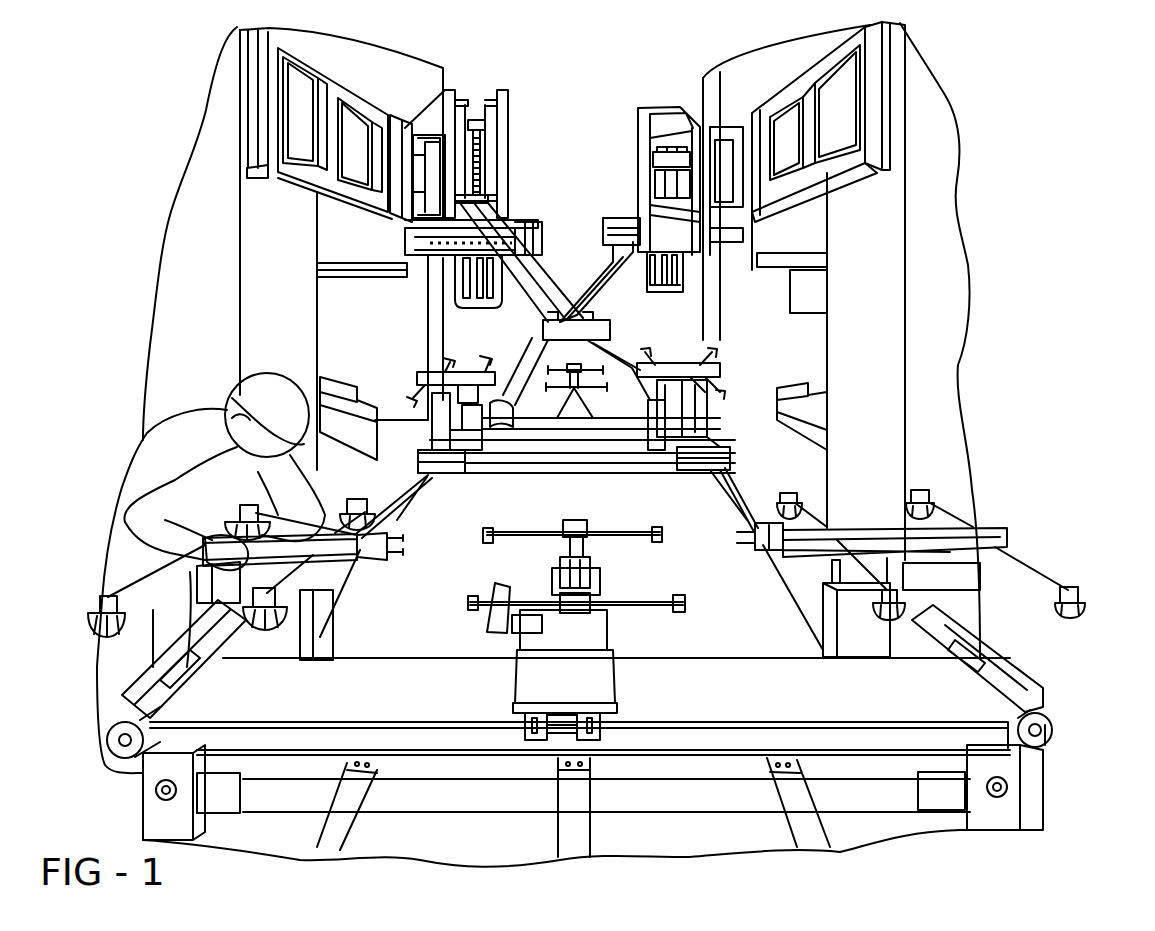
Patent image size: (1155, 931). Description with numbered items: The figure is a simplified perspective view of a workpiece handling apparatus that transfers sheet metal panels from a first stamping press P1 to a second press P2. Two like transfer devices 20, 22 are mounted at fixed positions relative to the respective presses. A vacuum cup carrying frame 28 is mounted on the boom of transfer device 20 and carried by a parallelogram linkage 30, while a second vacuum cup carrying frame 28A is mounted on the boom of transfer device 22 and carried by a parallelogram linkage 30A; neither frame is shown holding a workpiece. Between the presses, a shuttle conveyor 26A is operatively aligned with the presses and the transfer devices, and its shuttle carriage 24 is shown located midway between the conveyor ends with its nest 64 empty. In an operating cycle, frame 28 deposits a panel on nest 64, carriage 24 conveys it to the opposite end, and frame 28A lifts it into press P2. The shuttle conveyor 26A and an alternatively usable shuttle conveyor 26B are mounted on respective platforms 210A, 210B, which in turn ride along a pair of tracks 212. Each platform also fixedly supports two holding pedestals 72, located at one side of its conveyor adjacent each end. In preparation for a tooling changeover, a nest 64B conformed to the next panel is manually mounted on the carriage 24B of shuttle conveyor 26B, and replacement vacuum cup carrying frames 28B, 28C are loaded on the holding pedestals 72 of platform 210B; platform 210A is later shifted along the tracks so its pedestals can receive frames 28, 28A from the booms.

The transfer device 20 is at (512, 152).
The transfer device 22 is at (638, 138).
The first stamping press P1 is at (352, 303).
The second press P2 is at (805, 310).
The parallelogram linkage 30 is at (512, 312).
The parallelogram linkage 30A is at (607, 305).
The nest 64 is at (568, 362).
The vacuum cup carrying frame 28 is at (410, 380).
The vacuum cup carrying frame 28A is at (727, 366).
The holding pedestal 72 is at (853, 628).
The vacuum cup carrying frame 28B is at (357, 500).
The vacuum cup carrying frame 28C is at (763, 520).
The shuttle conveyor 26A is at (527, 414).
The platform 210A is at (548, 463).
The shuttle carriage 24 is at (598, 414).
The tracks 212 is at (405, 530).
The nest 64B is at (612, 538).
The carriage 24B is at (618, 690).
The shuttle conveyor 26B is at (1032, 668).
The platform 210B is at (787, 827).